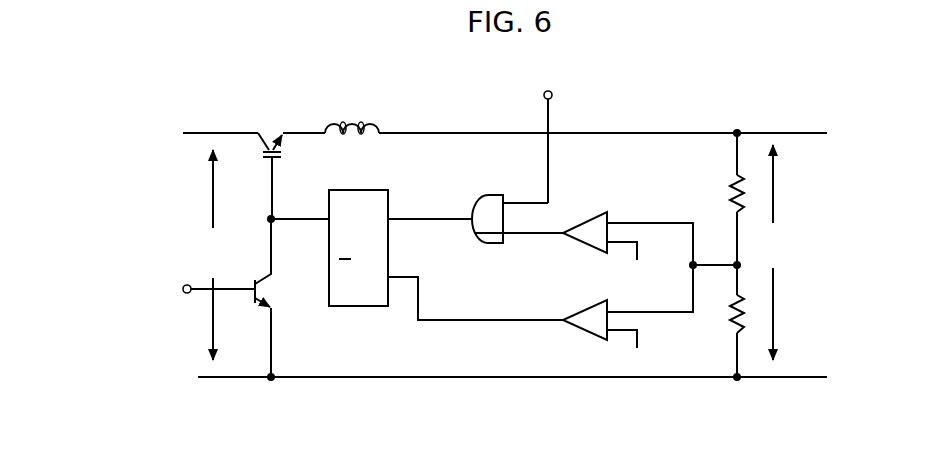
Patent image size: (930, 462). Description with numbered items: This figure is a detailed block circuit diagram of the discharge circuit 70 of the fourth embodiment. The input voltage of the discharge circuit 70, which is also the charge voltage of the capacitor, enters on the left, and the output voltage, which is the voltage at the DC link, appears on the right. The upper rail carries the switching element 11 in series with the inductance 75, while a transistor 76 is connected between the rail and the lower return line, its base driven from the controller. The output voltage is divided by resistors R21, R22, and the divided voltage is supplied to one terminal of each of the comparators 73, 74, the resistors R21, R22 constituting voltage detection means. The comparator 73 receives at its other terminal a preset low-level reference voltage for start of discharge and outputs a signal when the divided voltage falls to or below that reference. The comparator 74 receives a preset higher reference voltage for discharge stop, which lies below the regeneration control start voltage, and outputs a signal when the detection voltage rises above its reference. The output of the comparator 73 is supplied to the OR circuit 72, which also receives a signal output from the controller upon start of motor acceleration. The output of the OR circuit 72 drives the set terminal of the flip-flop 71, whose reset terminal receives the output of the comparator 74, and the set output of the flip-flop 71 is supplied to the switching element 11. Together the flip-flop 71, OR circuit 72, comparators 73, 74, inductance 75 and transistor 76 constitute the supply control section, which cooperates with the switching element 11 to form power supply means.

The discharge circuit 70 is at (458, 107).
The switching element 11 is at (262, 149).
The inductance 75 is at (353, 120).
The transistor 76 is at (275, 287).
The flip-flop 71 is at (353, 190).
The OR circuit 72 is at (481, 200).
The comparator 73 is at (568, 218).
The comparator 74 is at (590, 312).
The resistor R21 is at (718, 193).
The resistor R22 is at (718, 319).